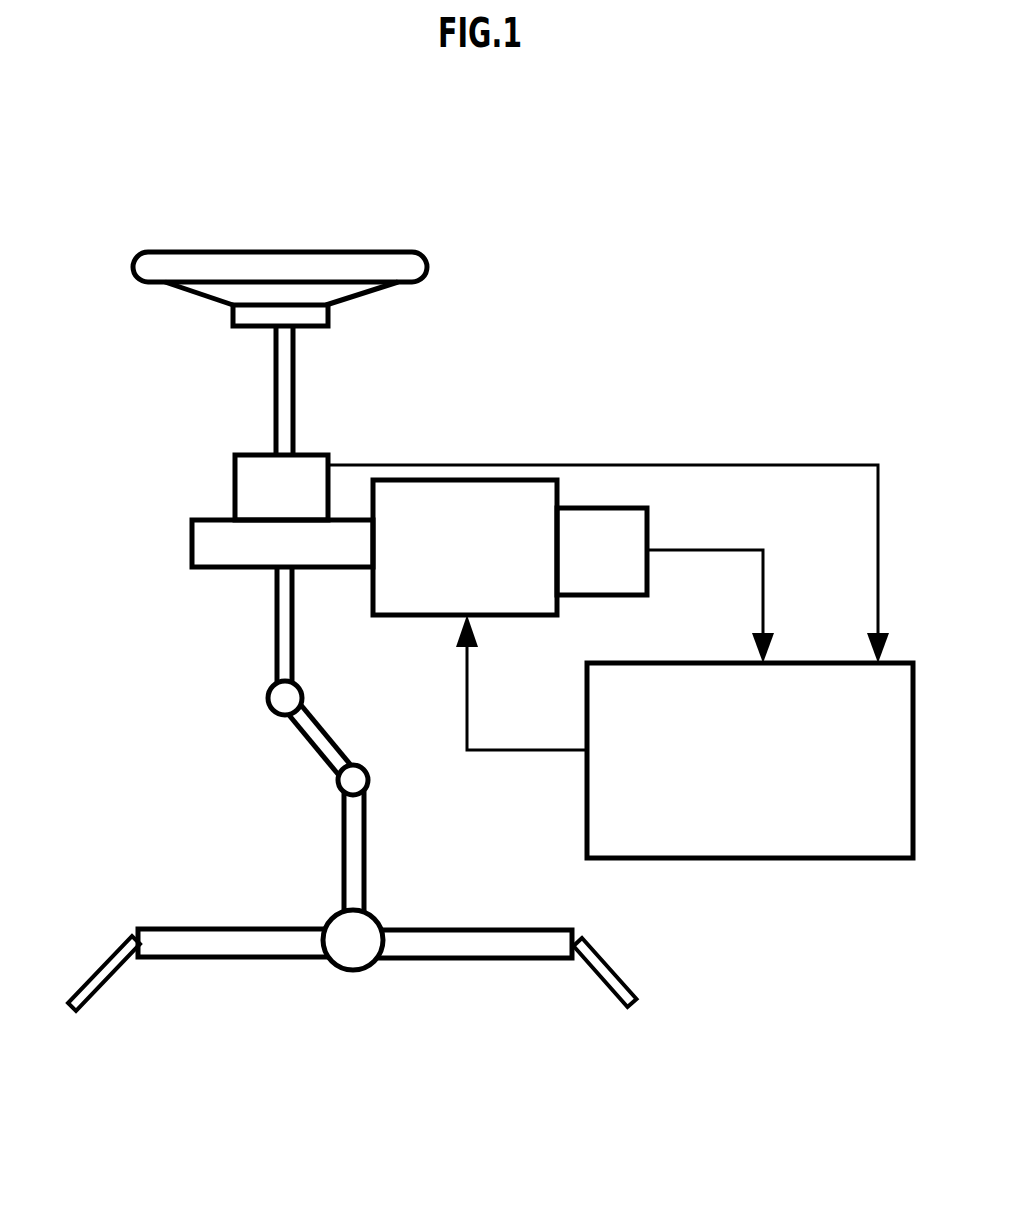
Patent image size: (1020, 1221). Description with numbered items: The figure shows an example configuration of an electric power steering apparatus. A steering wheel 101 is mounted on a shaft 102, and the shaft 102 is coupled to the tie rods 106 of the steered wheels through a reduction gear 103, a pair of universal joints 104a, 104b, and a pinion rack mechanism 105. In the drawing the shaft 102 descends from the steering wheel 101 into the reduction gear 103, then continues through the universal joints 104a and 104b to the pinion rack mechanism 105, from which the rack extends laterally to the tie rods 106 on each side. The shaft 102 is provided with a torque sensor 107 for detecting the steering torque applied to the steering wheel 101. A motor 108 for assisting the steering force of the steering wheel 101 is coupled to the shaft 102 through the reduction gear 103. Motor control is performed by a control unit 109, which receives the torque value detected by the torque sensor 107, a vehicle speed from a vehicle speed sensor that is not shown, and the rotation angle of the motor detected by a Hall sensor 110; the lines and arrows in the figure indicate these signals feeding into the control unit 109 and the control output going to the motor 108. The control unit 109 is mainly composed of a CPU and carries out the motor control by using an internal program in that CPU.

The steering wheel 101 is at (425, 262).
The shaft 102 is at (295, 378).
The reduction gear 103 is at (192, 548).
The universal joint 104a is at (268, 705).
The universal joint 104b is at (338, 784).
The pinion rack mechanism 105 is at (380, 918).
The tie rods 106 is at (612, 968).
The torque sensor 107 is at (235, 490).
The motor 108 is at (418, 618).
The control unit 109 is at (858, 860).
The Hall sensor 110 is at (648, 512).